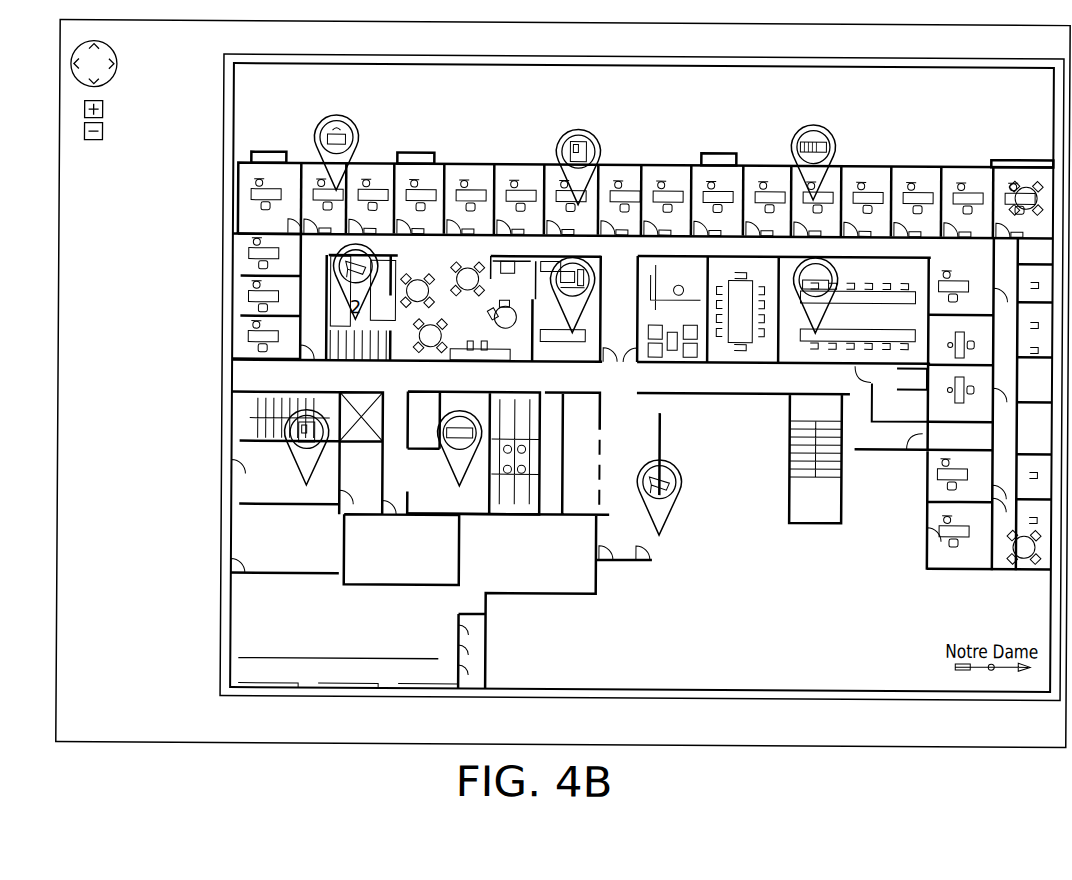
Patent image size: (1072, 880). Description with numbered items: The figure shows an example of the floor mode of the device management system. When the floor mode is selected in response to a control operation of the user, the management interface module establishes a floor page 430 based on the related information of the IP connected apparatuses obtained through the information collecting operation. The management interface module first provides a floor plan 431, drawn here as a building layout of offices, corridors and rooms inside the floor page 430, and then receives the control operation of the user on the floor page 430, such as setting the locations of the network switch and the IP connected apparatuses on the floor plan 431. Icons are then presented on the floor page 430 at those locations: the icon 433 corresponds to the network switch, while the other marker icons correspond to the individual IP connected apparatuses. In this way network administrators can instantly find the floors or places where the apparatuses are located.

The floor page 430 is at (847, 746).
The floor plan 431 is at (697, 699).
The icon 433 is at (838, 249).